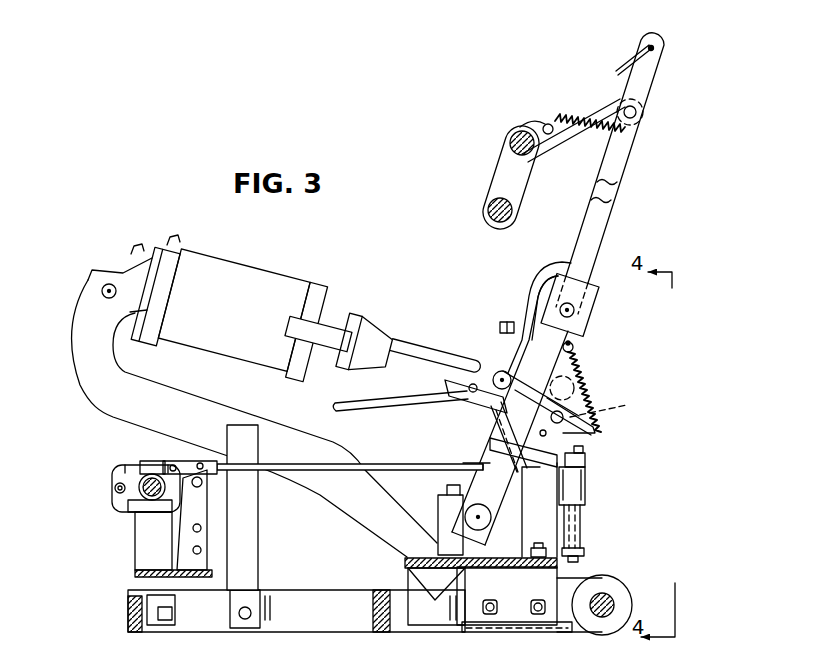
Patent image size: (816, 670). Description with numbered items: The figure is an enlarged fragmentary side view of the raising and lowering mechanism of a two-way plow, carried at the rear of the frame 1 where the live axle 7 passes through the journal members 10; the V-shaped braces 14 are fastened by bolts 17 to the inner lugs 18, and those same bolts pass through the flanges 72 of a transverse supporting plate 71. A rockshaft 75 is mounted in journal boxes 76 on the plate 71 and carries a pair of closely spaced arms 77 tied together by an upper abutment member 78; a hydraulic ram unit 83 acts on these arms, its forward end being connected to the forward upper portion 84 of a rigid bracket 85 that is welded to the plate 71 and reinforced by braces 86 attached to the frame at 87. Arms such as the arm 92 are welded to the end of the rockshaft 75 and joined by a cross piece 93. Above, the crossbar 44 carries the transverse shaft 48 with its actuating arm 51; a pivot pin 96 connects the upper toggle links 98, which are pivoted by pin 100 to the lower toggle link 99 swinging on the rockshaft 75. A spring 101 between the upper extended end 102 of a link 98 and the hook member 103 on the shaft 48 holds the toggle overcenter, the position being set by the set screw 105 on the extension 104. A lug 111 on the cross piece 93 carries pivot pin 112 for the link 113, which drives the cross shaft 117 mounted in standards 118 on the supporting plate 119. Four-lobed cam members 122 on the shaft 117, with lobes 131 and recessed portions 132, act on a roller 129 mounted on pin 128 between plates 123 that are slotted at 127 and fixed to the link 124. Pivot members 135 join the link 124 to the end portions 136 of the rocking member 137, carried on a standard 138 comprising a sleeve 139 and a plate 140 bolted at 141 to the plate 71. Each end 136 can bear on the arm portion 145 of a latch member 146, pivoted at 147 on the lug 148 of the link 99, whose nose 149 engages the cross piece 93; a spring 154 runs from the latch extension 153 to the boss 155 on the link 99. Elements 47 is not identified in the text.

The frame 1 is at (123, 628).
The live axle 7 is at (611, 603).
The journal or bearing members 10 is at (616, 582).
The V-shaped braces 14 is at (333, 620).
The bolts 17 is at (534, 604).
The inner lugs 18 is at (499, 633).
The crossbar 44 is at (486, 208).
The arm 47 is at (499, 170).
The transverse shaft member 48 is at (509, 139).
The actuating arm 51 is at (573, 147).
The supporting plate 71 is at (421, 553).
The flanges 72 is at (435, 615).
The rockshaft 75 is at (481, 511).
The journal boxes 76 is at (434, 505).
The arms 77 is at (540, 433).
The upper abutment member 78 is at (497, 453).
The hydraulic ram unit 83 is at (295, 276).
The forward upper portion of bracket 84 is at (102, 284).
The rigid bracket 85 is at (113, 418).
The braces 86 is at (253, 490).
The connection to frame 87 is at (247, 620).
The rockshaft arm 92 is at (478, 460).
The cross piece 93 is at (493, 417).
The pivot pin 96 is at (639, 111).
The upper toggle links 98 is at (616, 206).
The lower toggle link 99 is at (572, 340).
The pivot pin 100 is at (577, 307).
The spring 101 is at (578, 90).
The upper extended end 102 is at (640, 45).
The apertured hook member 103 is at (547, 124).
The extension 104 is at (531, 300).
The adjusting set screw 105 is at (503, 322).
The apertured lug 111 is at (481, 368).
The pivot pin 112 is at (445, 389).
The link 113 is at (372, 402).
The cross shaft 117 is at (174, 464).
The standards 118 is at (140, 555).
The supporting plate 119 is at (135, 575).
The four-lobed cam members 122 is at (210, 482).
The plates 123 is at (200, 462).
The cam-operated link 124 is at (283, 463).
The slot 127 is at (140, 500).
The pin 128 is at (114, 490).
The roller 129 is at (112, 472).
The lobes 131 is at (134, 462).
The recessed portions 132 is at (155, 461).
The pivot members 135 is at (584, 448).
The end portions 136 is at (586, 460).
The rocking member 137 is at (588, 483).
The bracket or standard 138 is at (583, 514).
The sleeve 139 is at (582, 532).
The plate 140 is at (586, 553).
The bolts 141 is at (538, 547).
The arm portion 145 is at (525, 481).
The latch member 146 is at (540, 385).
The pivot member 147 is at (565, 412).
The lug 148 is at (616, 403).
The nose or hook portion 149 is at (502, 371).
The extension 153 is at (592, 430).
The spring 154 is at (591, 380).
The extended boss 155 is at (575, 347).